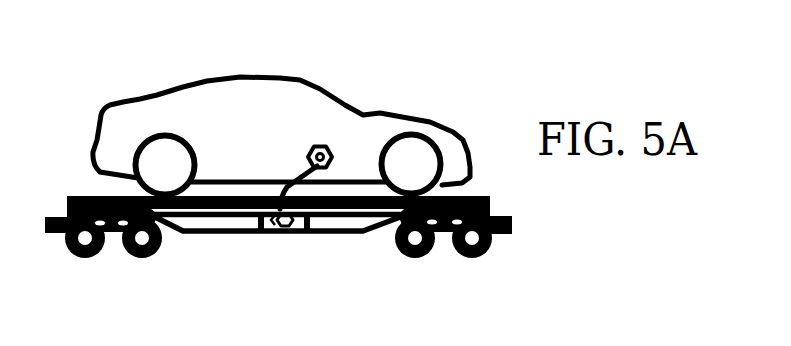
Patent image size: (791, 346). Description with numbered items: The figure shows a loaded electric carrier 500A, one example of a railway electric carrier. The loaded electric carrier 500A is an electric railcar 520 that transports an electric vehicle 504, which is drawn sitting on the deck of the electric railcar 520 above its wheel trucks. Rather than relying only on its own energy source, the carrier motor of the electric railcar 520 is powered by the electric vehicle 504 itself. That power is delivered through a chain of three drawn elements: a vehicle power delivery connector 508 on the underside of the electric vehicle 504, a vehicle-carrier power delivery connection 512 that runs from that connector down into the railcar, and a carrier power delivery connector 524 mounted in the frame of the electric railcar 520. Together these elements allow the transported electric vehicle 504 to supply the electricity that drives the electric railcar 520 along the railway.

The loaded electric carrier 500A is at (445, 88).
The electric vehicle 504 is at (241, 73).
The vehicle power delivery connector 508 is at (327, 147).
The vehicle-carrier power delivery connection 512 is at (299, 177).
The electric railcar 520 is at (231, 241).
The carrier power delivery connector 524 is at (289, 233).